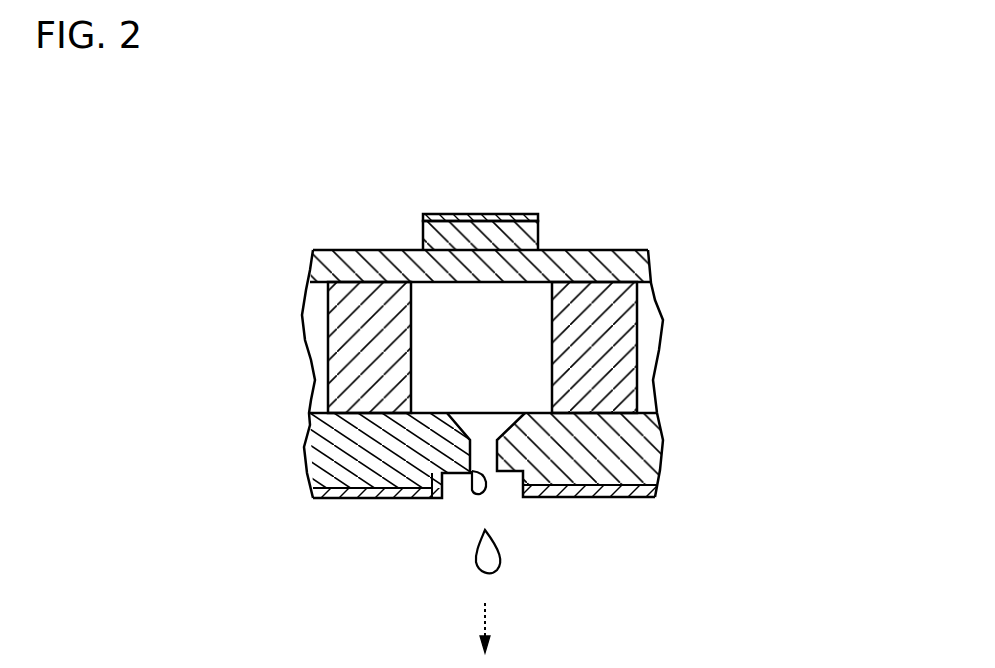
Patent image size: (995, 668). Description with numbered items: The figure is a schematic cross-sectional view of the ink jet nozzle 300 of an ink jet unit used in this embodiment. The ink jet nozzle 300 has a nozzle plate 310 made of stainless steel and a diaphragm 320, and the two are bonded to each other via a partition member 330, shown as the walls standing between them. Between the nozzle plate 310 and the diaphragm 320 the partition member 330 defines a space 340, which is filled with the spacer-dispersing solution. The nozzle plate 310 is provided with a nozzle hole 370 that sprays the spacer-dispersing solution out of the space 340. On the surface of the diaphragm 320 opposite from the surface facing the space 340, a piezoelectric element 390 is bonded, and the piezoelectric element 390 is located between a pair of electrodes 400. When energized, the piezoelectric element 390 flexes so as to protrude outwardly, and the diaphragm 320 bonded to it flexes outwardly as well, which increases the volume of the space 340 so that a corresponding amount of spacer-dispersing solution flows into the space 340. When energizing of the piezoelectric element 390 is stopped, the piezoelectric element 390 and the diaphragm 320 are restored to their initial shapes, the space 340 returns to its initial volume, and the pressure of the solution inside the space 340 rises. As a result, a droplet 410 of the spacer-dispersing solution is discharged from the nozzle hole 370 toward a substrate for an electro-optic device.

The ink jet nozzle 300 is at (501, 168).
The nozzle plate 310 is at (645, 450).
The diaphragm 320 is at (324, 263).
The partition member 330 is at (337, 364).
The space 340 is at (532, 327).
The nozzle hole 370 is at (477, 496).
The piezoelectric element 390 is at (539, 230).
The electrodes 400 is at (452, 214).
The droplet 410 is at (500, 556).